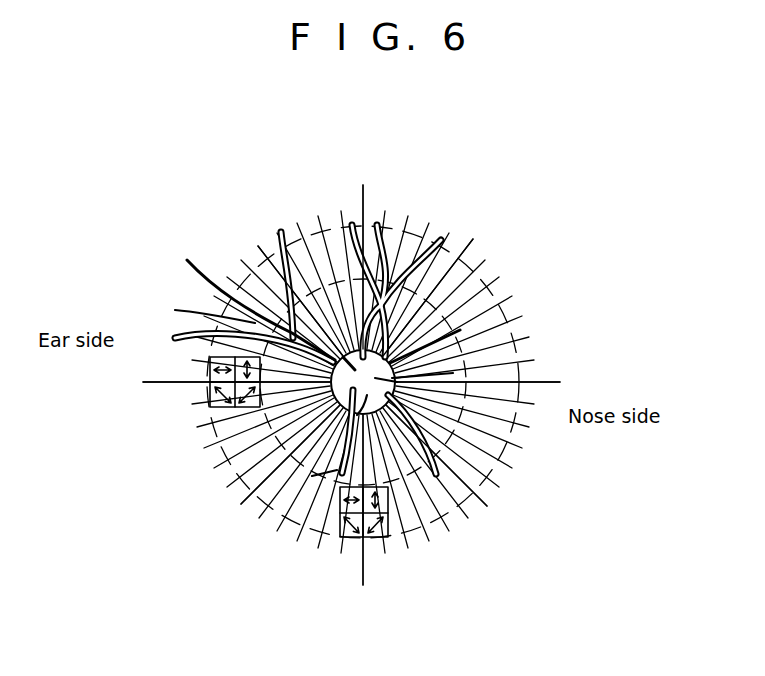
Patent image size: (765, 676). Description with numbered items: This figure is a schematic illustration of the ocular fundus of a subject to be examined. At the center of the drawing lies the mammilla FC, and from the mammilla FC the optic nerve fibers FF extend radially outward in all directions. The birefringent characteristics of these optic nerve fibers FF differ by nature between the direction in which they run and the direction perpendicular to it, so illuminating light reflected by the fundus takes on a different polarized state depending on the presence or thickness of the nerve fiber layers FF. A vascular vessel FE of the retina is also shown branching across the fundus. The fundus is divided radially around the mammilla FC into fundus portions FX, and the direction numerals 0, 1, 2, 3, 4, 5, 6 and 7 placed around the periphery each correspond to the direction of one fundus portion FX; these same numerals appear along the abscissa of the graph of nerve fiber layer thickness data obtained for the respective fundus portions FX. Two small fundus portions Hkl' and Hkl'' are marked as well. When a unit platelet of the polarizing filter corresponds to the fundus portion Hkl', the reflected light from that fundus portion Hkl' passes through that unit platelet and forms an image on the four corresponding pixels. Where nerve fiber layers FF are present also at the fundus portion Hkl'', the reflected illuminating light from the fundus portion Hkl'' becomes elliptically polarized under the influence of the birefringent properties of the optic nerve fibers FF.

The direction numeral 0 is at (225, 382).
The direction numeral 1 is at (294, 281).
The direction numeral 2 is at (362, 250).
The direction numeral 3 is at (436, 284).
The direction numeral 4 is at (487, 383).
The direction numeral 5 is at (454, 461).
The direction numeral 6 is at (363, 515).
The direction numeral 7 is at (290, 474).
The optic nerve fibers FF is at (325, 240).
The vascular vessel FE is at (417, 225).
The fundus portion FX is at (480, 300).
The mammilla FC is at (440, 357).
The fundus portion Hkl' is at (175, 422).
The fundus portion Hkl'' is at (392, 562).